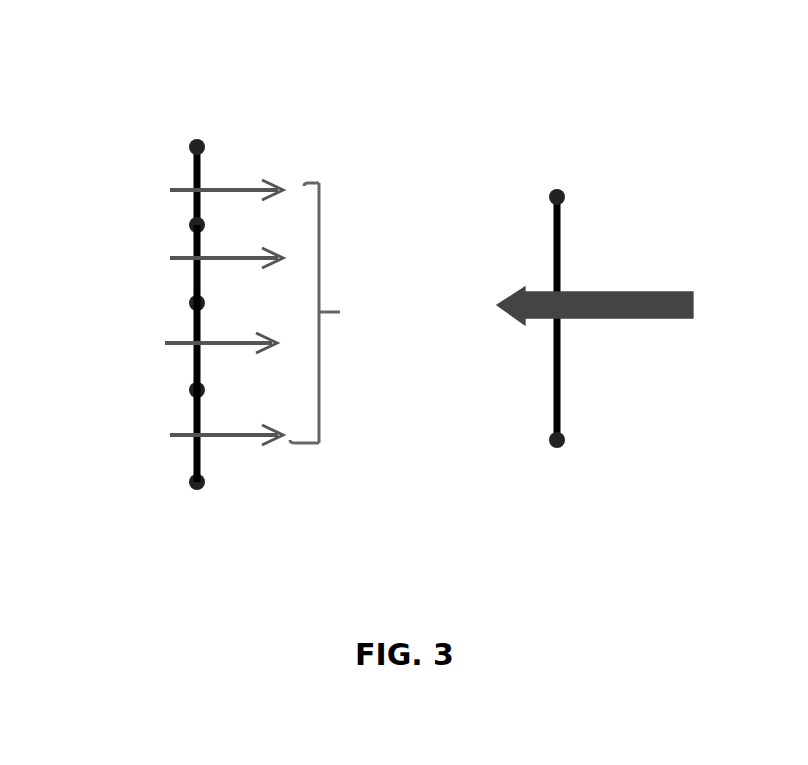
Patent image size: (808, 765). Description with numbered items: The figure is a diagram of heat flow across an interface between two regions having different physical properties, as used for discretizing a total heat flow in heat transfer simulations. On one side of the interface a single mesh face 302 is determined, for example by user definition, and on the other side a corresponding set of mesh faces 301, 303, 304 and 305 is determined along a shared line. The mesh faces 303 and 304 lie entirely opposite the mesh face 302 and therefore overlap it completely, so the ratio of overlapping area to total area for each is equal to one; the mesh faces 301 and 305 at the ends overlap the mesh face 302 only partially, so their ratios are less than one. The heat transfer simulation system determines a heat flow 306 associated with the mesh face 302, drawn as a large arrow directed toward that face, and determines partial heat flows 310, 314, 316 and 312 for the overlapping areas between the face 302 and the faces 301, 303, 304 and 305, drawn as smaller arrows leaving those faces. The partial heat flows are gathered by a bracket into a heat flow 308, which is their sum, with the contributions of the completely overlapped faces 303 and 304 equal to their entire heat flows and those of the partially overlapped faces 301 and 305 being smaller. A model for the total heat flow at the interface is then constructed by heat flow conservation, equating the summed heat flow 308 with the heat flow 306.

The mesh face 301 is at (197, 172).
The mesh face 302 is at (565, 197).
The mesh face 303 is at (197, 257).
The mesh face 304 is at (198, 355).
The mesh face 305 is at (198, 452).
The heat flow 306 is at (662, 293).
The heat flow 308 is at (377, 287).
The partial heat flow 310 is at (253, 185).
The partial heat flow 312 is at (225, 440).
The partial heat flow 314 is at (245, 262).
The partial heat flow 316 is at (223, 342).